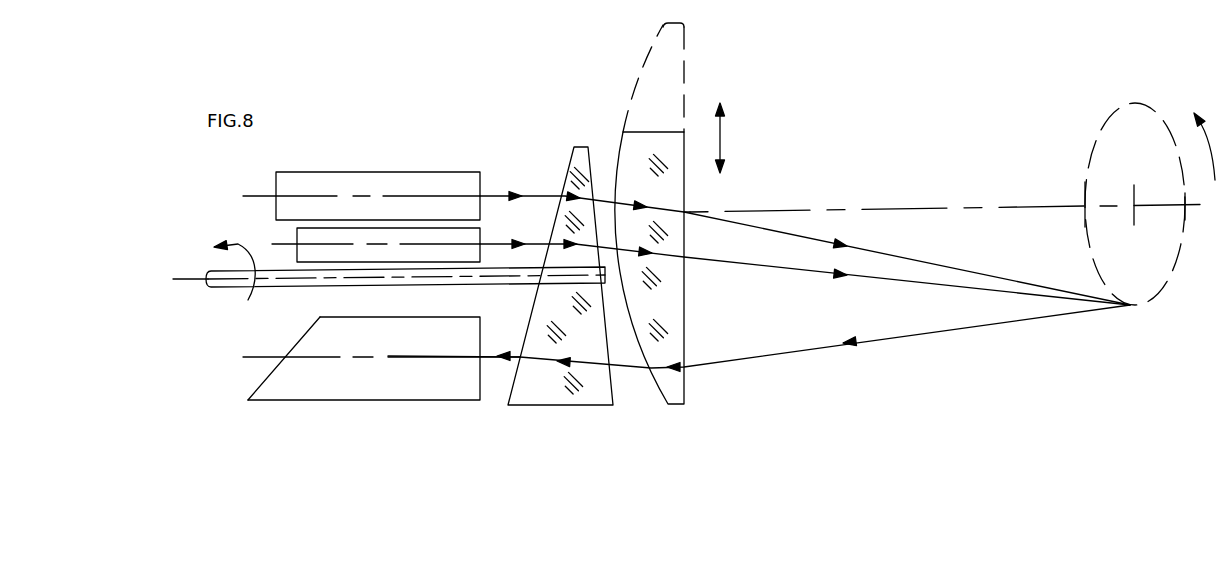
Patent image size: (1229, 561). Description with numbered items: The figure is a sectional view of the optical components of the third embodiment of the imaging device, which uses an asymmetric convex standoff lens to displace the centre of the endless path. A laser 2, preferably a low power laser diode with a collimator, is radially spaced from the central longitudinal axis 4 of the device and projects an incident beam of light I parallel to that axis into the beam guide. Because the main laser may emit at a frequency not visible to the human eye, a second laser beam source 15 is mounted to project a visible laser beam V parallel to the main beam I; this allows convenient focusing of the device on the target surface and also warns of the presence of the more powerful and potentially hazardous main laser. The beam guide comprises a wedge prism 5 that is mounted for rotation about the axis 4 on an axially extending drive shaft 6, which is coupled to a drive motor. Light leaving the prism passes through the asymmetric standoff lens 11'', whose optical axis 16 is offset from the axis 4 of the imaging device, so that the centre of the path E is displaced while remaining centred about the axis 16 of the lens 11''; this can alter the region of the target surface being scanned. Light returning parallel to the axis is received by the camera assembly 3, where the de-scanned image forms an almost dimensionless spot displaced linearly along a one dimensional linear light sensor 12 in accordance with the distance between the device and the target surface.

The laser 2 is at (367, 178).
The second laser beam source 15 is at (292, 238).
The central longitudinal axis 4 is at (190, 277).
The drive shaft 6 is at (303, 286).
The camera assembly 3 is at (397, 327).
The linear light sensor 12 is at (292, 340).
The wedge prism 5 is at (573, 153).
The asymmetric standoff lens 11'' is at (683, 213).
The incident beam of light I is at (499, 193).
The visible laser beam V is at (497, 243).
The optical axis of the lens 16 is at (944, 208).
The path E is at (1093, 146).